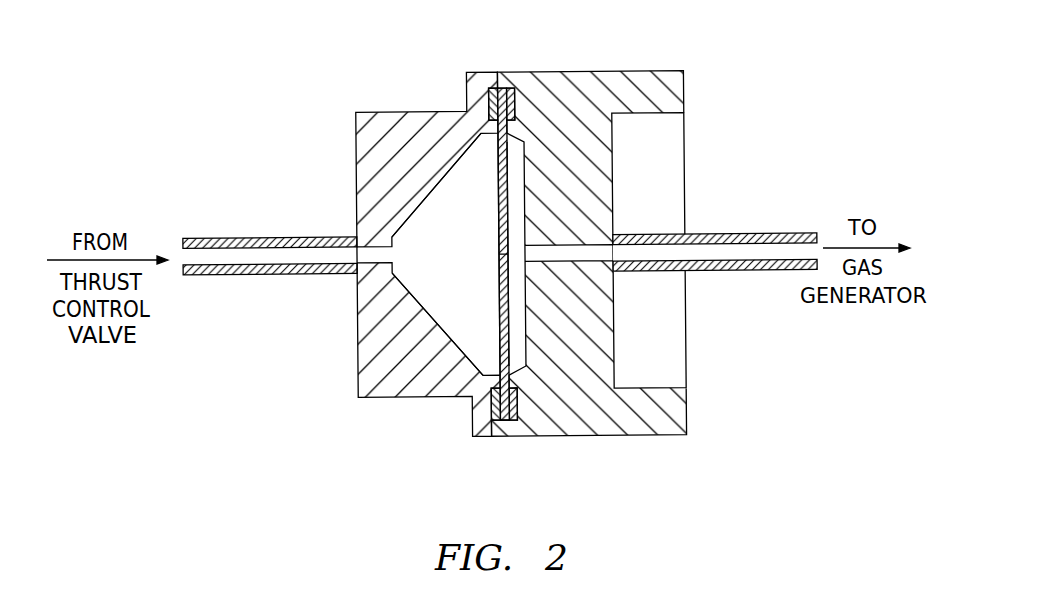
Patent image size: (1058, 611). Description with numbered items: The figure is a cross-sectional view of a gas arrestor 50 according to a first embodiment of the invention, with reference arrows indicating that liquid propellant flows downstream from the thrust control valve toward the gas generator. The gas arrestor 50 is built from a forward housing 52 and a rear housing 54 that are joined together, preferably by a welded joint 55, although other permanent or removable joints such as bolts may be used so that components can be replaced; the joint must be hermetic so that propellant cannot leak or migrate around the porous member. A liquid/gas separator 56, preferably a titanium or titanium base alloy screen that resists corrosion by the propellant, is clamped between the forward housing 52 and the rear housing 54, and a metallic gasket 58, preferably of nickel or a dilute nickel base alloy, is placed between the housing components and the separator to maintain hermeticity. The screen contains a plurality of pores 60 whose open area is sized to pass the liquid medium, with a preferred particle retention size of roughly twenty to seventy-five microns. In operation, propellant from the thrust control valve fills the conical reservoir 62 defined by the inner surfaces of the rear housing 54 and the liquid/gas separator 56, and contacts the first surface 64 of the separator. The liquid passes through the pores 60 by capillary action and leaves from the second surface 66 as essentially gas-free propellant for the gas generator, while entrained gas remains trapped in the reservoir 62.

The gas arrestor 50 is at (361, 84).
The forward housing 52 is at (621, 80).
The rear housing 54 is at (385, 392).
The joint 55 is at (491, 84).
The liquid/gas separator 56 is at (506, 362).
The metallic gasket 58 is at (503, 422).
The pores 60 is at (506, 322).
The reservoir 62 is at (413, 283).
The first surface 64 is at (497, 152).
The second surface 66 is at (508, 173).